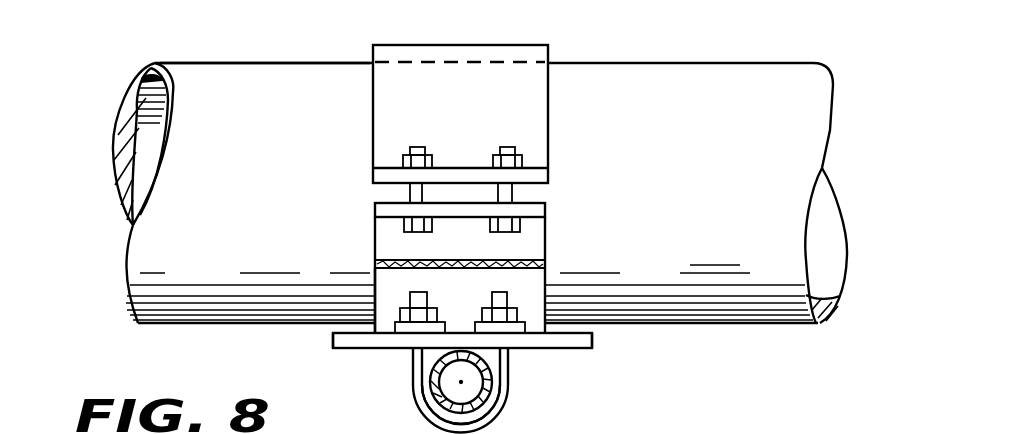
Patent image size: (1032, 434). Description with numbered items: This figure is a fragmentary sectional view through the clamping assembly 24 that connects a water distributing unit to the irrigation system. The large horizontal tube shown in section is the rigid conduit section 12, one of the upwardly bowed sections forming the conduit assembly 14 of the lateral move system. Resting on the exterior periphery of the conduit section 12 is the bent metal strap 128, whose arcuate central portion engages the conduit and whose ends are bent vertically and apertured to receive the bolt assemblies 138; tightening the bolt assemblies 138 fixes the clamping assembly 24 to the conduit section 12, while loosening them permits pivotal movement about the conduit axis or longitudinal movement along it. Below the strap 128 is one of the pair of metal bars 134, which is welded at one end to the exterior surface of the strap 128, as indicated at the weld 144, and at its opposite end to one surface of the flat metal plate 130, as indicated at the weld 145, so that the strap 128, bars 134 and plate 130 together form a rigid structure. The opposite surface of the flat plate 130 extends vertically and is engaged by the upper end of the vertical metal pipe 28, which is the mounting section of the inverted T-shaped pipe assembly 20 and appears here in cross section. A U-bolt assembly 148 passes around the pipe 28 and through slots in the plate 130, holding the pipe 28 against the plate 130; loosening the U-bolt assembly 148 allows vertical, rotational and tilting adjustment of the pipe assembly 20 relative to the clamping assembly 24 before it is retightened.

The conduit section 12 is at (738, 73).
The conduit assembly 14 is at (201, 56).
The inverted T-shaped pipe assembly 20 is at (508, 375).
The clamping assembly 24 is at (382, 358).
The vertical metal pipe 28 is at (432, 396).
The bent metal strap 128 is at (548, 222).
The flat metal plate 130 is at (333, 340).
The metal bar 134 is at (533, 310).
The bolt assembly 138 is at (507, 150).
The weld 144 is at (546, 262).
The weld 145 is at (383, 327).
The U-bolt assembly 148 is at (499, 412).